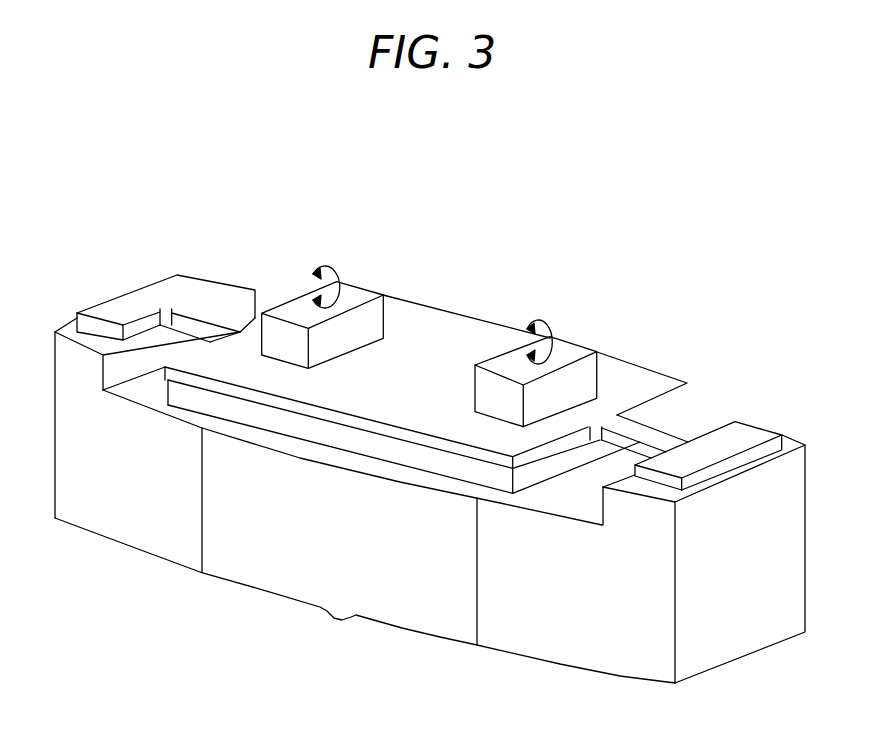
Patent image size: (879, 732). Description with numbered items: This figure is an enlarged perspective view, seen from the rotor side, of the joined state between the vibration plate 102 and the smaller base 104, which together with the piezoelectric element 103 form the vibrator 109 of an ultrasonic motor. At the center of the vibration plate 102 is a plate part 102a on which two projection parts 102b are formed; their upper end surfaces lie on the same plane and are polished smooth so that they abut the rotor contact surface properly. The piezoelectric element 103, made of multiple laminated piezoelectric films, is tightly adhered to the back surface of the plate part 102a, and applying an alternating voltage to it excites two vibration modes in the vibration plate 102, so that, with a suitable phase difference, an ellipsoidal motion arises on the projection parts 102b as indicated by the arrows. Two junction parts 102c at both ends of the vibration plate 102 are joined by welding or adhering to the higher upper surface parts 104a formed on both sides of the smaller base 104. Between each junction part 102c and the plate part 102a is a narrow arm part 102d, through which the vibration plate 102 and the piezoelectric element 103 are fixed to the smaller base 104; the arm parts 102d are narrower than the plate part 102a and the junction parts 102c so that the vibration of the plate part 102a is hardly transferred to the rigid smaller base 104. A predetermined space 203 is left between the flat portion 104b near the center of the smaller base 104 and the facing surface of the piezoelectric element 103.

The vibrator 109 is at (793, 133).
The vibration plate 102 is at (229, 180).
The plate part 102a is at (470, 332).
The projection part 102b is at (360, 292).
The junction part 102c is at (155, 285).
The arm part 102d is at (227, 318).
The piezoelectric element 103 is at (570, 460).
The smaller base 104 is at (405, 590).
The higher upper surface part 104a is at (92, 338).
The flat portion 104b is at (150, 390).
The predetermined space 203 is at (278, 440).